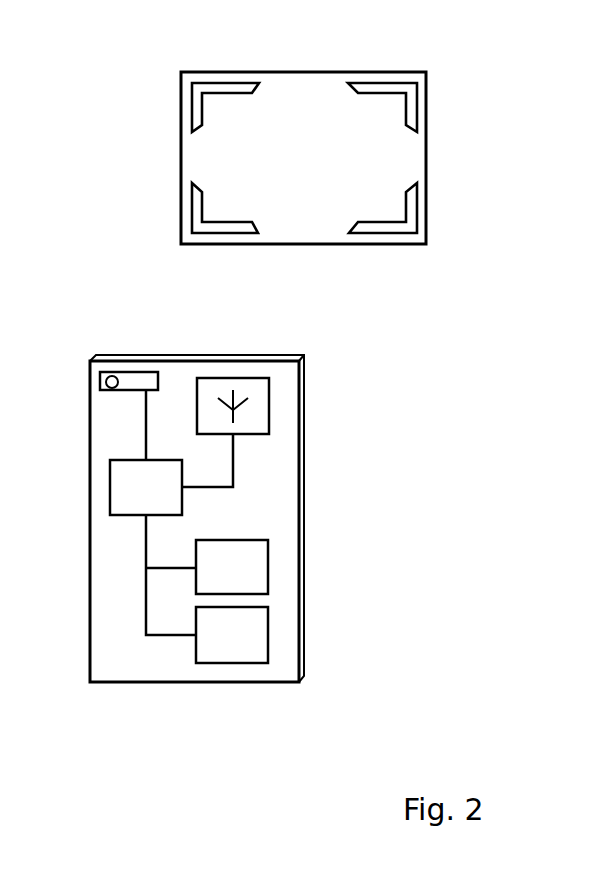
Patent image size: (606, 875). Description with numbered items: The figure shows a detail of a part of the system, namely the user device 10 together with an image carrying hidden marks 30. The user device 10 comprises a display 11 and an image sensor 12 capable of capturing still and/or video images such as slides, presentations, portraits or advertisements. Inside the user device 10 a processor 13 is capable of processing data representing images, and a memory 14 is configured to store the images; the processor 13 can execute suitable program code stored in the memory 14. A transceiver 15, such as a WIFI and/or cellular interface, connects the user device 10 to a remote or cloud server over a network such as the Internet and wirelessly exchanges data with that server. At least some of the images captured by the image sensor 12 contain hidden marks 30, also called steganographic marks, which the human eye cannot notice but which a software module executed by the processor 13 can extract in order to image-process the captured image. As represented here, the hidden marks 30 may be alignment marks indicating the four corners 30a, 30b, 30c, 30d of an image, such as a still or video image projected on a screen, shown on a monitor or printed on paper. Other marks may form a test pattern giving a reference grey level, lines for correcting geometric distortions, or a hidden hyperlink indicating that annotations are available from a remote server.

The hidden marks 30 is at (302, 93).
The corner 30a is at (412, 105).
The corner 30b is at (412, 209).
The corner 30c is at (197, 209).
The corner 30d is at (197, 105).
The user device 10 is at (195, 670).
The display 11 is at (262, 635).
The image sensor 12 is at (128, 392).
The processor 13 is at (118, 488).
The memory 14 is at (262, 567).
The transceiver 15 is at (262, 405).